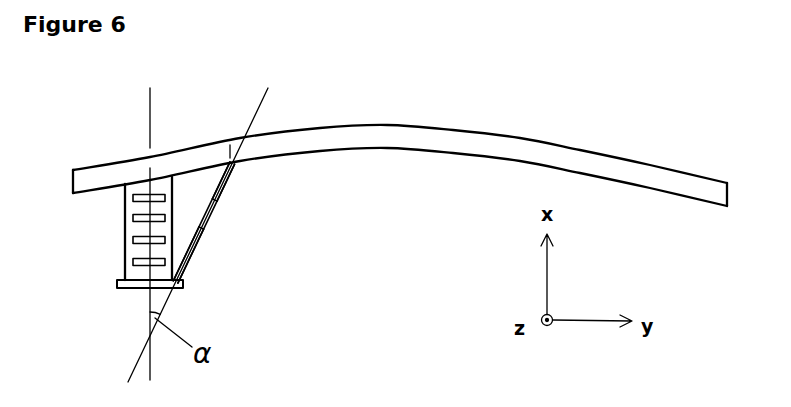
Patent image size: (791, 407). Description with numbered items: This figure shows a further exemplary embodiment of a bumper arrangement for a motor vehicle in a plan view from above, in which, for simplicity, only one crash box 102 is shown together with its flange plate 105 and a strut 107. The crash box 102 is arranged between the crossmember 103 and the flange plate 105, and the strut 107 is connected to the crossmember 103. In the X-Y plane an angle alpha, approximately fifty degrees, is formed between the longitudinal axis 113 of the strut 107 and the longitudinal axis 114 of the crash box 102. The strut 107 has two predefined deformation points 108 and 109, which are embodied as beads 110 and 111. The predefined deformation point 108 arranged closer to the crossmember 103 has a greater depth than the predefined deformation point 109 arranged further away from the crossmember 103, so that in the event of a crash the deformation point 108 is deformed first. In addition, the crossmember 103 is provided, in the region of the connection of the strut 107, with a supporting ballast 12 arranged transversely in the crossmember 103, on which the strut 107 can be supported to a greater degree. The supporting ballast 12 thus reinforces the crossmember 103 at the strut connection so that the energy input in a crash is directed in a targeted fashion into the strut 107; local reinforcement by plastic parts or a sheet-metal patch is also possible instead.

The crossmember 103 is at (405, 138).
The crash box 102 is at (125, 230).
The flange plate 105 is at (128, 290).
The longitudinal axis of the strut 113 is at (151, 100).
The longitudinal axis of the crash box 114 is at (267, 98).
The predefined deformation point 108 is at (221, 198).
The bead 110 is at (221, 198).
The strut 107 is at (203, 232).
The predefined deformation point 109 is at (192, 265).
The bead 111 is at (192, 265).
The supporting ballast 12 is at (232, 160).